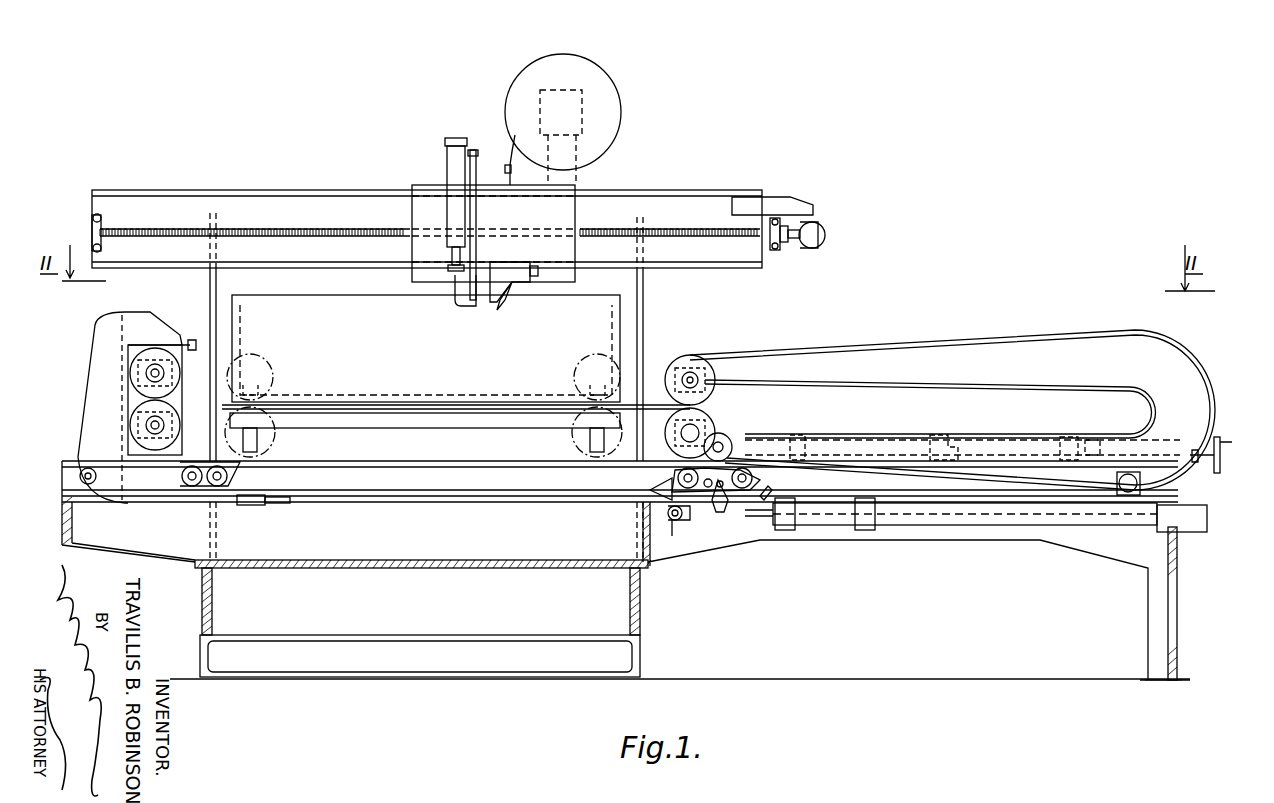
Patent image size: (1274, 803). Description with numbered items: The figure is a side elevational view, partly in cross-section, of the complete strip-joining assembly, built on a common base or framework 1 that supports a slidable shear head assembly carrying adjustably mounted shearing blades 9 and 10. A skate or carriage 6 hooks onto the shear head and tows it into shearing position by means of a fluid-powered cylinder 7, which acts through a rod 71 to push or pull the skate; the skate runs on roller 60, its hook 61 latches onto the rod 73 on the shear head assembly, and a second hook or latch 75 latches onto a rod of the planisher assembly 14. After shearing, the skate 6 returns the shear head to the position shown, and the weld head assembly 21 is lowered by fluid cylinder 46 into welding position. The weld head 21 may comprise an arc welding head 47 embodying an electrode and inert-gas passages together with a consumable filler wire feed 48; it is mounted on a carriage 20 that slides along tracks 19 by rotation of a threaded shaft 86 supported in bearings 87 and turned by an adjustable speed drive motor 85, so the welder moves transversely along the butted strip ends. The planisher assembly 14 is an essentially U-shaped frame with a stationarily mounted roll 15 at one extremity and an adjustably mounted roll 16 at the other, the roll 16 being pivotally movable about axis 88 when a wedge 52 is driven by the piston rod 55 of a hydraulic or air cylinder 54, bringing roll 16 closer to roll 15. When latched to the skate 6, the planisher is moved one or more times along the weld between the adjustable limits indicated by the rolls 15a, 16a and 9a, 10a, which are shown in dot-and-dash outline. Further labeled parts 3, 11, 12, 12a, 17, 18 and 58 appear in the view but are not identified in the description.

The base or framework 1 is at (655, 612).
The hopper 3 is at (76, 378).
The skate or carriage 6 is at (690, 510).
The fluid-powered cylinder 7 is at (822, 526).
The shearing blade 9 is at (180, 382).
The adjustable position roll 9a is at (578, 368).
The shearing blade 10 is at (170, 414).
The adjustable position roll 10a is at (580, 430).
The frame 11 is at (88, 484).
The guide roller 12 is at (213, 487).
The guide roller 12a is at (190, 486).
The planisher assembly 14 is at (1056, 318).
The stationarily mounted roll 15 is at (712, 388).
The adjustable position roll 15a is at (272, 368).
The adjustably mounted roll 16 is at (715, 425).
The adjustable position roll 16a is at (276, 434).
The left post 17 is at (209, 285).
The right post 18 is at (644, 304).
The tracks 19 is at (303, 190).
The carriage 20 is at (580, 202).
The weld head assembly 21 is at (640, 116).
The fluid cylinder 46 is at (447, 170).
The arc welding head 47 is at (484, 306).
The consumable filler wire feed 48 is at (505, 302).
The wedge 52 is at (805, 440).
The hydraulic cylinder 54 is at (958, 440).
The piston rod 55 is at (1036, 442).
The crank handle 58 is at (1222, 440).
The roller 60 is at (1115, 478).
The hook 61 is at (668, 520).
The rod 71 is at (730, 512).
The rod 73 is at (248, 506).
The hook or latch 75 is at (762, 518).
The adjustable speed drive motor 85 is at (823, 228).
The threaded shaft 86 is at (258, 228).
The bearings 87 is at (95, 216).
The axis 88 is at (728, 444).